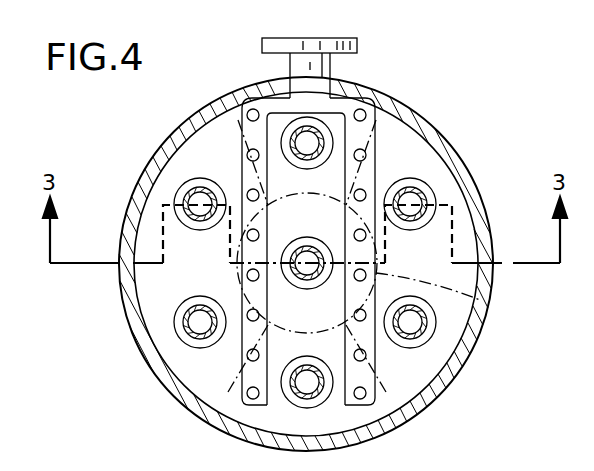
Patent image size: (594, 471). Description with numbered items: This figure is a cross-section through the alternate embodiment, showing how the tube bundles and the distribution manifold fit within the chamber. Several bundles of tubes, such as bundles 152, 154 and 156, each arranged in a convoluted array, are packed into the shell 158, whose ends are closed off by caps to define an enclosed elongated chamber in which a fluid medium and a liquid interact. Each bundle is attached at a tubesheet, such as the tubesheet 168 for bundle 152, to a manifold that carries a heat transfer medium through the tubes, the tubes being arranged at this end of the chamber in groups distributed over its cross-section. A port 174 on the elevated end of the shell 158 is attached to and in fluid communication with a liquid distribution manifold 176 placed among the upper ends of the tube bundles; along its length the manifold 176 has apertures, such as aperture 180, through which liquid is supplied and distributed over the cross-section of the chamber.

The bundle of tubes 152 is at (148, 225).
The bundle of tubes 154 is at (315, 313).
The bundle of tubes 156 is at (447, 180).
The shell 158 is at (464, 365).
The tubesheet 168 is at (183, 172).
The port 174 is at (310, 38).
The liquid distribution manifold 176 is at (347, 110).
The aperture 180 is at (479, 300).